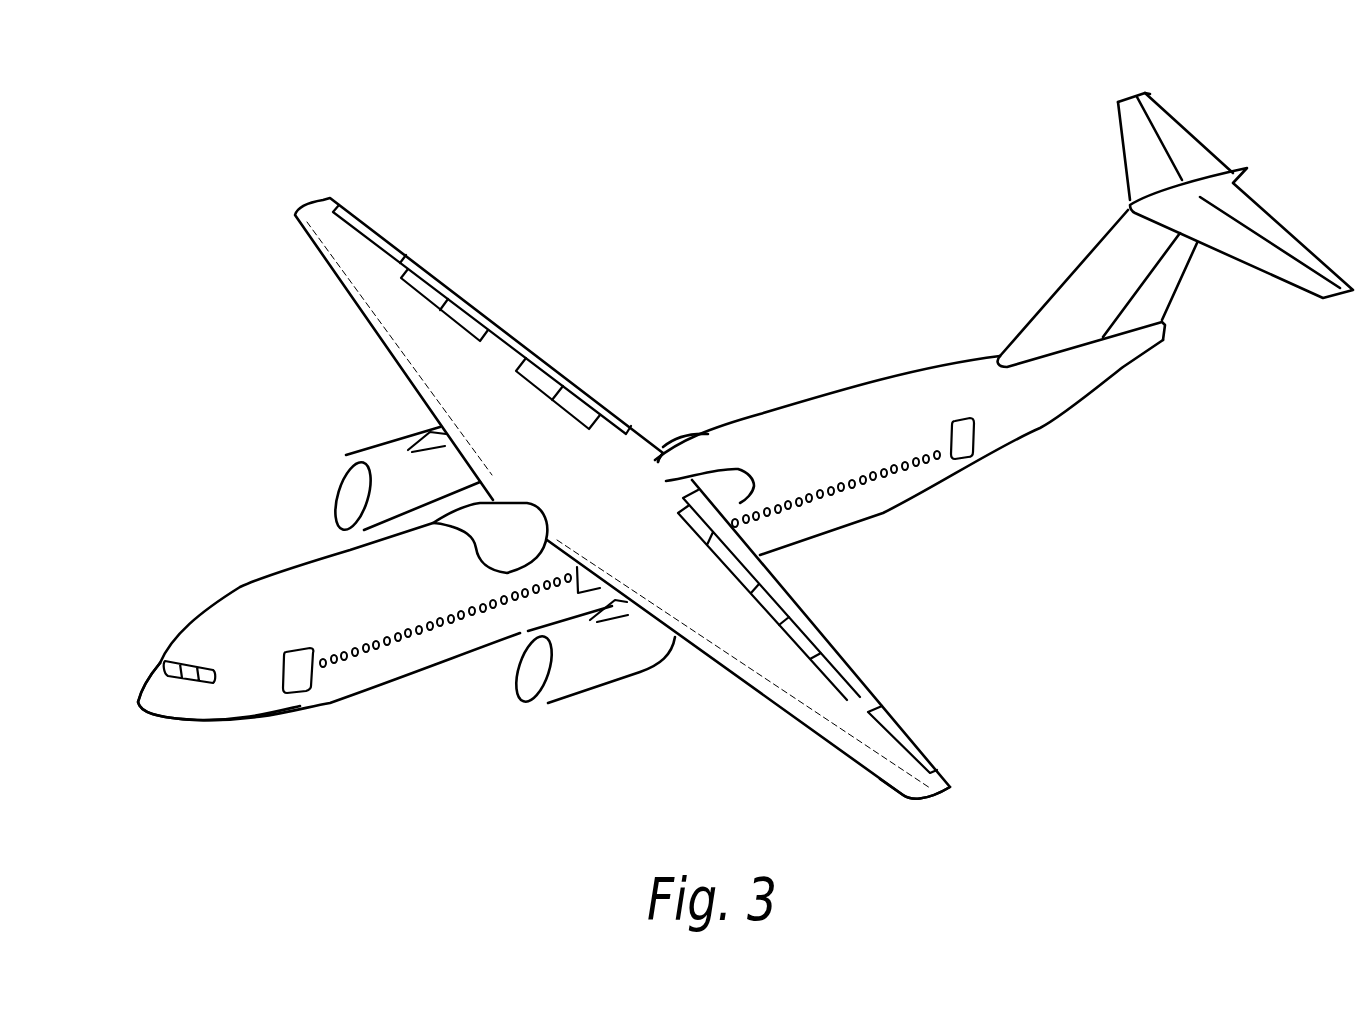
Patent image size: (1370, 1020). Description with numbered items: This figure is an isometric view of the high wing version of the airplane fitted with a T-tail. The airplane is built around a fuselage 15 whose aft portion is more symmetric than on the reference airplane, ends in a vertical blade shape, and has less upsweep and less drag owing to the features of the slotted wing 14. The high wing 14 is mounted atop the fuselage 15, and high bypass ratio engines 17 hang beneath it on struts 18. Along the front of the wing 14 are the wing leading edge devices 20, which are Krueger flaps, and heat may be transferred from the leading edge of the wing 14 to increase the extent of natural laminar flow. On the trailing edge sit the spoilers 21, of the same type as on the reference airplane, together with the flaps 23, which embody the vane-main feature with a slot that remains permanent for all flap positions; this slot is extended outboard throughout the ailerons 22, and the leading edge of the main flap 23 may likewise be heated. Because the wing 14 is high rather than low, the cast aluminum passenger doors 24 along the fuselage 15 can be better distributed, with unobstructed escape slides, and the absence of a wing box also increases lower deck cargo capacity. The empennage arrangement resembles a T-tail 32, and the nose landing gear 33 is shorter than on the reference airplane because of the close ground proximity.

The wing 14 is at (903, 797).
The fuselage 15 is at (757, 463).
The high bypass ratio engines 17 is at (617, 670).
The struts 18 is at (372, 452).
The wing leading edge devices 20 is at (780, 703).
The spoilers 21 is at (472, 323).
The ailerons 22 is at (913, 747).
The flaps 23 is at (575, 387).
The passenger doors 24 is at (967, 443).
The T-tail 32 is at (1147, 245).
The nose landing gear 33 is at (273, 717).